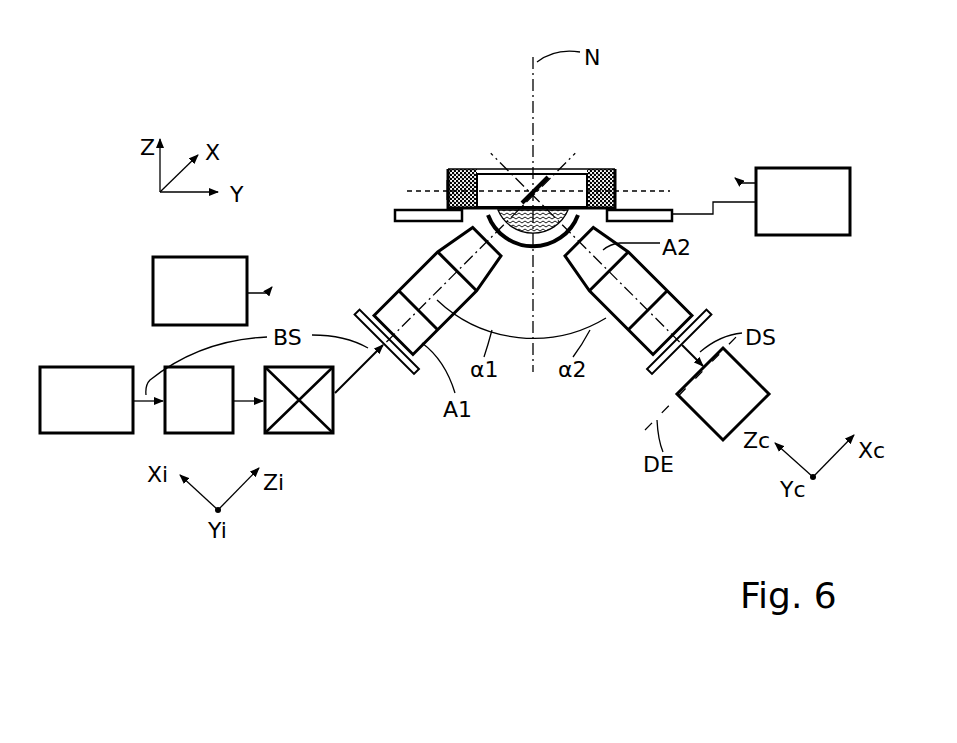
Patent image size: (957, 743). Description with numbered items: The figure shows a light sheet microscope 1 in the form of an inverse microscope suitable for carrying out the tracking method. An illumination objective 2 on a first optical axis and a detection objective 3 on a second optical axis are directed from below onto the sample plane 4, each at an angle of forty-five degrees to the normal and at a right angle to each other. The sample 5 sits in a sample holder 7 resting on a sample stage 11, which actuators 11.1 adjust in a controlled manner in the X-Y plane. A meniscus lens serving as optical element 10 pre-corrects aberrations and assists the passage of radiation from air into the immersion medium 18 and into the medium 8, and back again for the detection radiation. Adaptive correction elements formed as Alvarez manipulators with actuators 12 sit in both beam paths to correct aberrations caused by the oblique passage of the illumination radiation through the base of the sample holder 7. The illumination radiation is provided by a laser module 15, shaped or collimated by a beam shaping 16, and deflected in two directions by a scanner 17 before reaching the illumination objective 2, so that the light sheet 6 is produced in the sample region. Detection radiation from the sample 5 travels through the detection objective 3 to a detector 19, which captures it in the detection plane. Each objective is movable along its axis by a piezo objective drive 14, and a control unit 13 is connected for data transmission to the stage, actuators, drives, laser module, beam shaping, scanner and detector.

The light sheet microscope 1 is at (403, 55).
The illumination objective 2 is at (430, 270).
The detection objective 3 is at (687, 316).
The sample plane 4 is at (647, 191).
The sample 5 is at (570, 183).
The light sheet 6 is at (530, 172).
The sample holder 7 is at (448, 192).
The medium 8 is at (453, 167).
The optical element 10 is at (487, 219).
The sample stage 11 is at (393, 211).
The actuators 11.1 is at (780, 214).
The actuators 12 is at (397, 290).
The control unit 13 is at (186, 304).
The objective drive 14 is at (360, 307).
The laser module 15 is at (73, 413).
The beam shaping 16 is at (185, 413).
The scanner 17 is at (298, 433).
The immersion medium 18 is at (546, 237).
The detector 19 is at (709, 407).